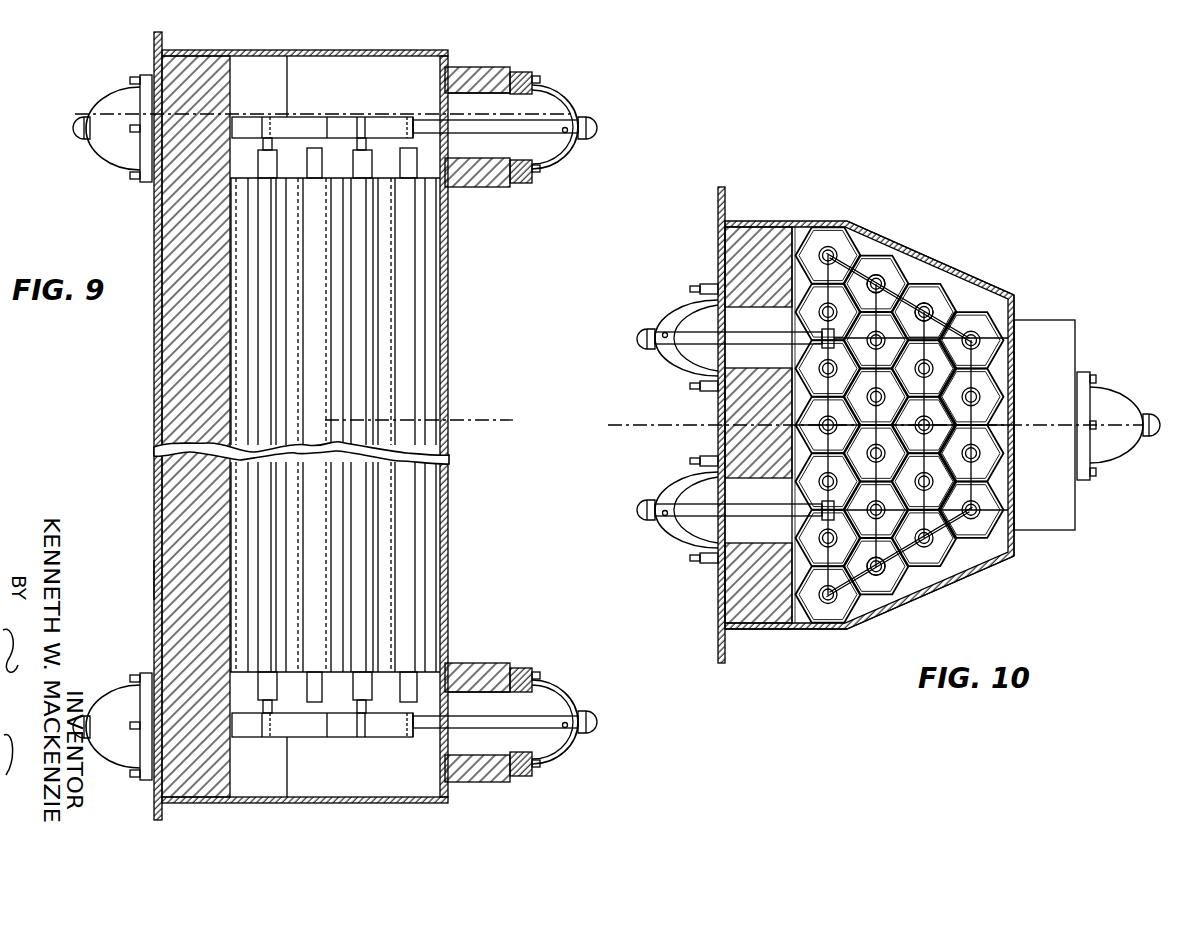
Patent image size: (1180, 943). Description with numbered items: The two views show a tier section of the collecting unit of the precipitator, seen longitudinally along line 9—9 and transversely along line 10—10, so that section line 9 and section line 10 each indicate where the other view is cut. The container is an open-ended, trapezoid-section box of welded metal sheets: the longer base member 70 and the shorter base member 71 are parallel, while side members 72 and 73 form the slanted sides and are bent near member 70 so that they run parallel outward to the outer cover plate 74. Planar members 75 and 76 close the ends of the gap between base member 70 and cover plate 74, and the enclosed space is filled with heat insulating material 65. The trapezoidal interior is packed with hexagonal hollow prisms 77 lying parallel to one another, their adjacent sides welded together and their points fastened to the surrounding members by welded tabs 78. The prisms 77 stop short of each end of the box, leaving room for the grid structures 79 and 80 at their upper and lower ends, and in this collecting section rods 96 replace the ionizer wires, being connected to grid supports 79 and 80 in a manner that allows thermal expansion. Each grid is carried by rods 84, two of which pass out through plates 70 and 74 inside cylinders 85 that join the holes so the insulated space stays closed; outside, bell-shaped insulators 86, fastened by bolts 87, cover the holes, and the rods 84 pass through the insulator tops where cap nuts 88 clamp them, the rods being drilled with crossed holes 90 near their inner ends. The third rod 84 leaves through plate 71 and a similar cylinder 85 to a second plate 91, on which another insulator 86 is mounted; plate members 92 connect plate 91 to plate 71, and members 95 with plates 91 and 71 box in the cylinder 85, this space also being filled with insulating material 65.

In FIG. 10, the section line 9— 9 is at (622, 429).
In FIG. 9, the section line 10— 10 is at (82, 111).
In FIG. 9, the heat insulating material 65 is at (158, 365).
In FIG. 10, the heat insulating material 65 is at (745, 580).
In FIG. 9, the longer base member 70 is at (232, 84).
In FIG. 10, the longer base member 70 is at (810, 624).
In FIG. 9, the shorter base member 71 is at (449, 238).
In FIG. 10, the shorter base member 71 is at (960, 540).
In FIG. 10, the side member 72 is at (917, 598).
In FIG. 10, the side member 73 is at (915, 251).
In FIG. 9, the outer cover plate 74 is at (158, 578).
In FIG. 10, the outer cover plate 74 is at (727, 648).
In FIG. 9, the planar closing member 75 is at (200, 803).
In FIG. 9, the planar closing member 76 is at (182, 52).
In FIG. 9, the hexagonal hollow prisms 77 is at (396, 508).
In FIG. 10, the hexagonal hollow prisms 77 is at (916, 560).
In FIG. 10, the welded tabs 78 is at (797, 250).
In FIG. 9, the upper grid structure 79 is at (341, 119).
In FIG. 9, the lower grid structure 80 is at (390, 735).
In FIG. 10, the lower grid structure 80 is at (961, 330).
In FIG. 9, the rods 84 is at (536, 131).
In FIG. 10, the rods 84 is at (690, 336).
In FIG. 9, the cylinders 85 is at (474, 92).
In FIG. 9, the bell-shaped insulators 86 is at (121, 150).
In FIG. 10, the bell-shaped insulators 86 is at (688, 305).
In FIG. 9, the bolts 87 is at (135, 180).
In FIG. 9, the cap nuts 88 is at (74, 123).
In FIG. 10, the cap nuts 88 is at (645, 331).
In FIG. 9, the crossed holes 90 is at (569, 133).
In FIG. 10, the crossed holes 90 is at (662, 338).
In FIG. 9, the second plate 91 is at (517, 72).
In FIG. 10, the plate members 92 is at (1038, 330).
In FIG. 9, the box members 95 is at (473, 66).
In FIG. 9, the rods 96 is at (270, 683).
In FIG. 10, the rods 96 is at (877, 278).